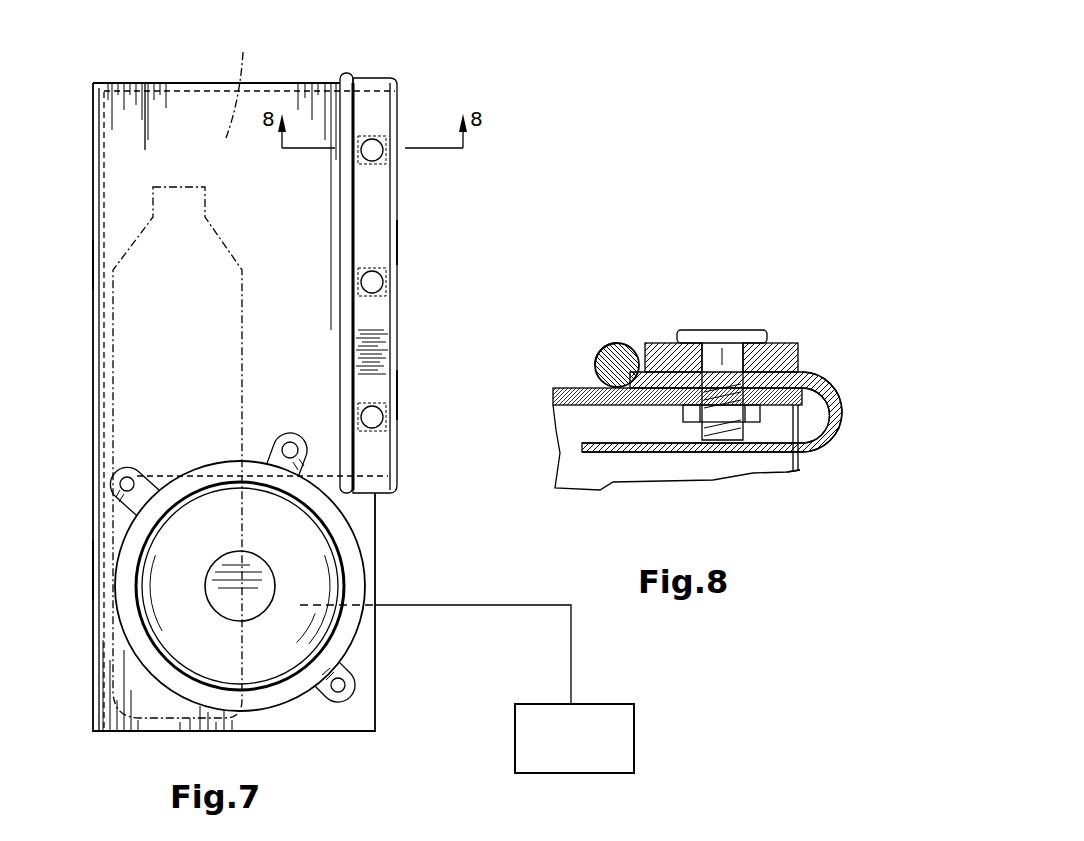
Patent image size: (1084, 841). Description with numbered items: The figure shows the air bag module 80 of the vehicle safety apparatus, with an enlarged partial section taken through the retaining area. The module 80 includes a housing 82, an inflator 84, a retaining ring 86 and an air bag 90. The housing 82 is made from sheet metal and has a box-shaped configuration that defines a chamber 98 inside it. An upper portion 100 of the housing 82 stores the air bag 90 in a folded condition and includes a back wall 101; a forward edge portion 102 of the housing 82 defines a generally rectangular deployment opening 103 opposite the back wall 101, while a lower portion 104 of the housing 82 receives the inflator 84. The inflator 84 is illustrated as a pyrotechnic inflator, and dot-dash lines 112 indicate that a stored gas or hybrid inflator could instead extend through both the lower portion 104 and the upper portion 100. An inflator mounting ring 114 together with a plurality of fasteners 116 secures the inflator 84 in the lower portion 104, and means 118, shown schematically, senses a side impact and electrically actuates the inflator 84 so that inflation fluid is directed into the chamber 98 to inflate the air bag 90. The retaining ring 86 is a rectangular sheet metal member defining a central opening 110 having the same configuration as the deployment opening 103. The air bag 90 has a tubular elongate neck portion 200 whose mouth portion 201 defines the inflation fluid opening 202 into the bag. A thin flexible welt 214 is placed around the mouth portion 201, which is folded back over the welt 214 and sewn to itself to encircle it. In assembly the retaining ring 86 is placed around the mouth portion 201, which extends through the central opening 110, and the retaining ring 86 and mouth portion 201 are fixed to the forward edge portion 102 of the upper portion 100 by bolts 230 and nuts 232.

In FIG. 7, the air bag module 80 is at (492, 196).
In FIG. 8, the air bag module 80 is at (760, 502).
In FIG. 7, the housing 82 is at (88, 335).
In FIG. 8, the housing 82 is at (545, 422).
In FIG. 7, the inflator 84 is at (300, 575).
In FIG. 7, the retaining ring 86 is at (400, 96).
In FIG. 8, the retaining ring 86 is at (798, 345).
In FIG. 7, the air bag 90 is at (405, 241).
In FIG. 8, the air bag 90 is at (812, 458).
In FIG. 7, the chamber 98 is at (240, 81).
In FIG. 7, the upper portion 100 is at (145, 148).
In FIG. 8, the upper portion 100 is at (552, 390).
In FIG. 7, the back wall 101 is at (93, 265).
In FIG. 7, the forward edge portion 102 is at (317, 320).
In FIG. 8, the forward edge portion 102 is at (810, 436).
In FIG. 8, the deployment opening 103 is at (795, 478).
In FIG. 7, the lower portion 104 is at (93, 566).
In FIG. 8, the central opening 110 is at (668, 390).
In FIG. 7, the stored gas or hybrid inflator 112 is at (253, 287).
In FIG. 7, the inflator mounting ring 114 is at (335, 632).
In FIG. 7, the fasteners 116 is at (120, 482).
In FIG. 7, the means for sensing a side impact 118 is at (535, 735).
In FIG. 8, the elongate neck portion 200 is at (822, 368).
In FIG. 8, the mouth portion 201 is at (602, 350).
In FIG. 7, the inflation fluid opening 202 is at (398, 388).
In FIG. 8, the inflation fluid opening 202 is at (812, 412).
In FIG. 8, the welt 214 is at (618, 345).
In FIG. 7, the bolts 230 is at (363, 153).
In FIG. 8, the bolts 230 is at (721, 330).
In FIG. 8, the nuts 232 is at (692, 412).